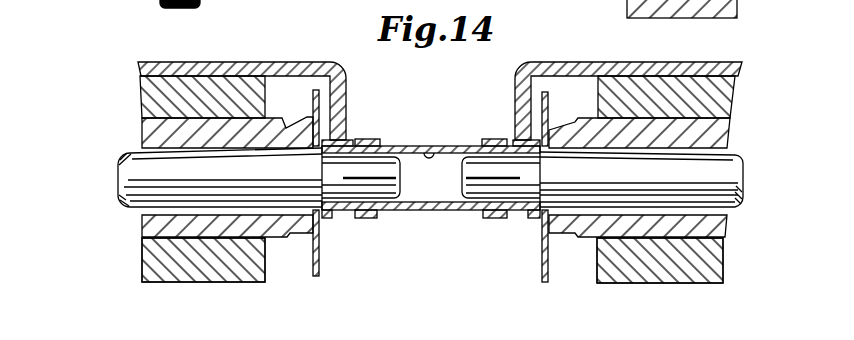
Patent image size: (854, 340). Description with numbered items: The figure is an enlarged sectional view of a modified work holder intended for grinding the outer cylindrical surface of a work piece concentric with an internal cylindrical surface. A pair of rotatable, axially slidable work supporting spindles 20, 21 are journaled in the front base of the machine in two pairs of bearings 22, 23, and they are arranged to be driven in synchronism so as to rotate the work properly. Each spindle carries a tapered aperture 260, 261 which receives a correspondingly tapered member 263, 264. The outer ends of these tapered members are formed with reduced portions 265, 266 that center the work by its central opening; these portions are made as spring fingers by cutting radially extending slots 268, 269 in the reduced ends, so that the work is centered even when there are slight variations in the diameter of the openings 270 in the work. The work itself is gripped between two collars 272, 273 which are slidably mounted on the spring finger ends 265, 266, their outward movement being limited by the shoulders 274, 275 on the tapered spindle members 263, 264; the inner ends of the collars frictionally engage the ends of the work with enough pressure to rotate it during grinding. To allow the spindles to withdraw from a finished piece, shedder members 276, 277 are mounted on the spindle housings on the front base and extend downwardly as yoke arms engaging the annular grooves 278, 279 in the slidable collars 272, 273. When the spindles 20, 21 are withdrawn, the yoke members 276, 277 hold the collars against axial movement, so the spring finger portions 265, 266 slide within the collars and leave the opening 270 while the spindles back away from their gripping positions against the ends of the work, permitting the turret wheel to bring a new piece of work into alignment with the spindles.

The work supporting spindle 20 is at (148, 140).
The work supporting spindle 21 is at (723, 137).
The bearings 22 is at (147, 92).
The bearings 23 is at (723, 93).
The tapered aperture 260 is at (228, 210).
The tapered aperture 261 is at (653, 210).
The tapered member 263 is at (737, 200).
The tapered member 264 is at (118, 203).
The reduced portion 265 is at (465, 212).
The reduced portion 266 is at (400, 212).
The radially extending slots 268 is at (366, 139).
The radially extending slots 269 is at (481, 139).
The opening in the work 270 is at (438, 146).
The collar 272 is at (365, 218).
The collar 273 is at (495, 218).
The shoulder 274 is at (315, 152).
The shoulder 275 is at (541, 154).
The shedder member 276 is at (308, 62).
The shedder member 277 is at (547, 62).
The annular groove 278 is at (342, 218).
The annular groove 279 is at (518, 218).